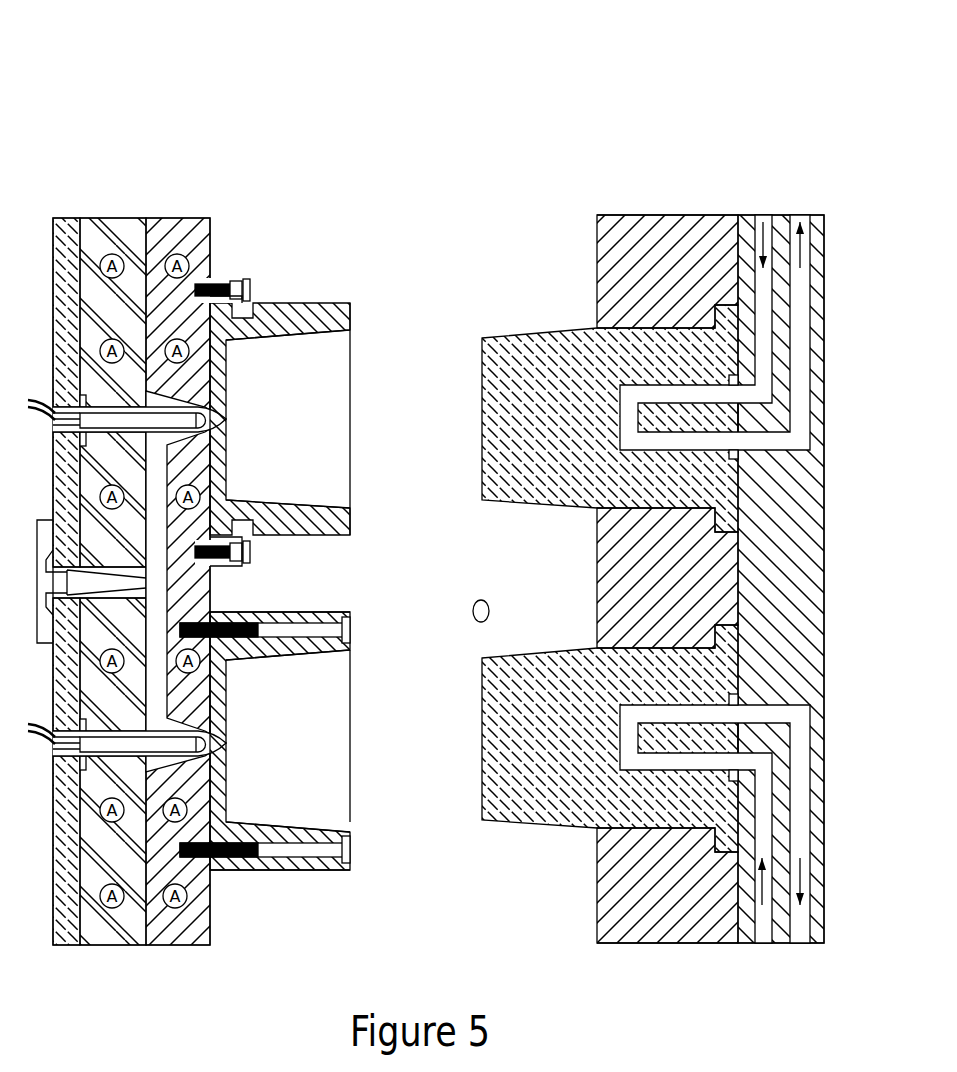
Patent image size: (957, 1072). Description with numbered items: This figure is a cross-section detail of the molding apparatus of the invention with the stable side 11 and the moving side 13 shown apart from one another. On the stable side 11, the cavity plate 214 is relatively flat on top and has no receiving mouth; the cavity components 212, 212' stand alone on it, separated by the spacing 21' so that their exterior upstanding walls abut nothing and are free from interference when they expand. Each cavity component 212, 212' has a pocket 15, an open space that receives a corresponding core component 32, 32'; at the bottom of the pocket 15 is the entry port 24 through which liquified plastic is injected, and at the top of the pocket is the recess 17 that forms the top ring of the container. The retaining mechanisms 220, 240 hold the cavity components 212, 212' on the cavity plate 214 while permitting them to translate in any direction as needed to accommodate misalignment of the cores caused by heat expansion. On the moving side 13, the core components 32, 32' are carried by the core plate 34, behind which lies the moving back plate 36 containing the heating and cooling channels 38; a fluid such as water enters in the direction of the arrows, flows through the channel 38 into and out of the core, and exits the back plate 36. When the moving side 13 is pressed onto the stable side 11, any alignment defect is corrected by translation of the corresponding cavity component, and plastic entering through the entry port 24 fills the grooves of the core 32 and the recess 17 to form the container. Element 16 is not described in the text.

The stable side 11 is at (212, 140).
The moving side 13 is at (682, 122).
The pocket 15 is at (322, 423).
The insulating plate 16 is at (115, 228).
The recess 17 is at (352, 325).
The spacing 21' is at (328, 697).
The entry port 24 is at (236, 416).
The core component 32 is at (589, 353).
The core component 32' is at (592, 783).
The core plate 34 is at (677, 212).
The moving back plate 36 is at (828, 350).
The core heating and cooling channel 38 is at (765, 200).
The cavity component 212 is at (287, 379).
The cavity component 212' is at (334, 716).
The cavity plate 214 is at (175, 218).
The retaining mechanism 220 is at (246, 272).
The retaining mechanism 240 is at (357, 630).